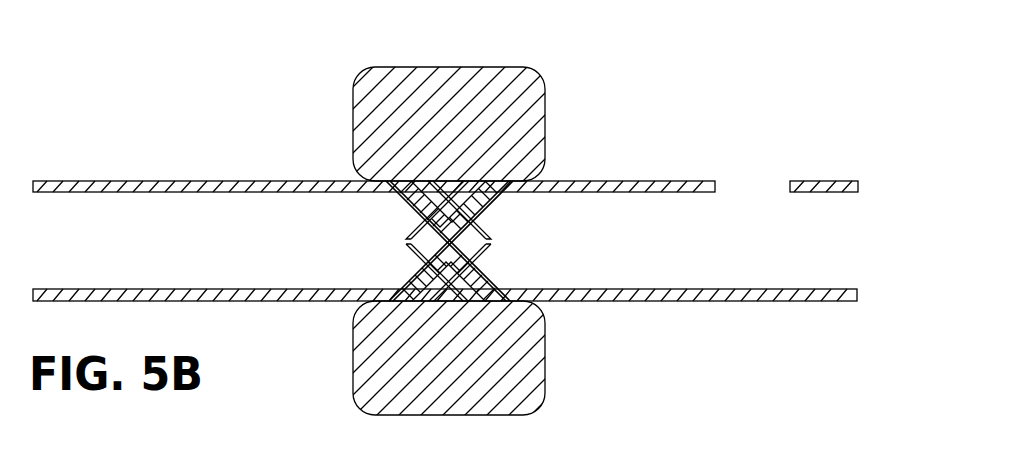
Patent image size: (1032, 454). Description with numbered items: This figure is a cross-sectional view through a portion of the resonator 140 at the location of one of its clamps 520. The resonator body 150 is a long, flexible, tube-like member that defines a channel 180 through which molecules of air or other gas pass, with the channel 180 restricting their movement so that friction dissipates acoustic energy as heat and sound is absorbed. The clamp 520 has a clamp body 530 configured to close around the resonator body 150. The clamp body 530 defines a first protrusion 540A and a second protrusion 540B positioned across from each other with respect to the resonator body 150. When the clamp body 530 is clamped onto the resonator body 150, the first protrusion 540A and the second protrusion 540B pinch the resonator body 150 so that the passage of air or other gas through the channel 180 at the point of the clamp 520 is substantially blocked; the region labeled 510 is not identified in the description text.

The resonator 140 is at (118, 188).
The resonator body 150 is at (187, 185).
The channel 180 is at (868, 240).
The gap 510 is at (757, 183).
The clamp 520 is at (532, 68).
The clamp body 530 is at (546, 117).
The first protrusion 540A is at (481, 207).
The second protrusion 540B is at (488, 283).